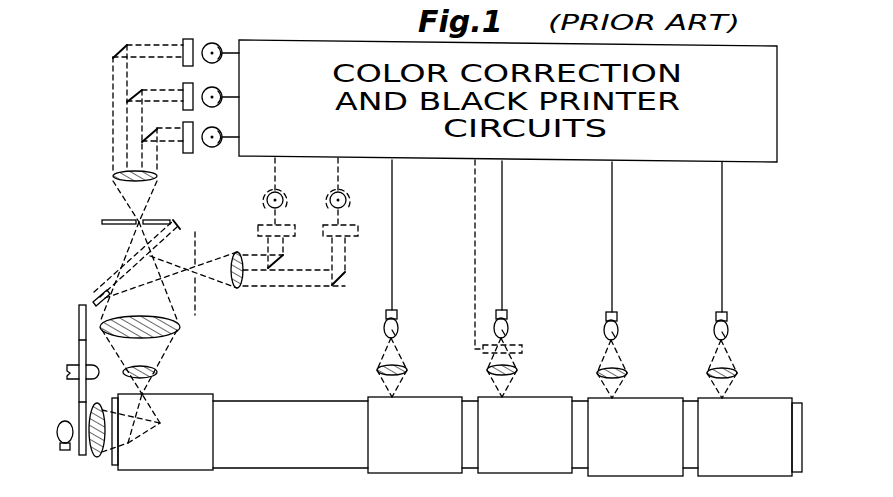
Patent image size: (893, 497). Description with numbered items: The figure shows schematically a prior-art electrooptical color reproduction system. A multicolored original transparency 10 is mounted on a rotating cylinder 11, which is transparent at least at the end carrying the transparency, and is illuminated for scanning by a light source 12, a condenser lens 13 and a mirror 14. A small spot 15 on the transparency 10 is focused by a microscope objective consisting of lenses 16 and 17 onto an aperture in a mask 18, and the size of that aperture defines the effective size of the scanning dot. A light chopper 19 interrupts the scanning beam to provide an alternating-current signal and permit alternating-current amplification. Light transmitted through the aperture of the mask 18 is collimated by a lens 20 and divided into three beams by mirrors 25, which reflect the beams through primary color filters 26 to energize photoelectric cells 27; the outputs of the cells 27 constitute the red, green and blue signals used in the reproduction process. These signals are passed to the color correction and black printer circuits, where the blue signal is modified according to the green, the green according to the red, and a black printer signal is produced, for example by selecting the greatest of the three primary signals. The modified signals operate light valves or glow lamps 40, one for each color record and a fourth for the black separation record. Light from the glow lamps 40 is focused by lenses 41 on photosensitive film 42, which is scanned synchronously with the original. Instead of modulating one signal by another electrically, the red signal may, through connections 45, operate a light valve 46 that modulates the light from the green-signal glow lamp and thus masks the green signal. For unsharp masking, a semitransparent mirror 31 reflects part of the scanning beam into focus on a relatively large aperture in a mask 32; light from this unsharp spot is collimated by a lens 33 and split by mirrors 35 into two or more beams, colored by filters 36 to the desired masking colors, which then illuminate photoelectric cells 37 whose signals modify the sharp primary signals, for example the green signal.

The multicolored original transparency 10 is at (200, 470).
The rotating cylinder 11 is at (272, 396).
The light source 12 is at (65, 421).
The condenser lens 13 is at (92, 452).
The mirror 14 is at (150, 432).
The small spot 15 is at (144, 394).
The lens 16 is at (157, 372).
The lens 17 is at (180, 327).
The mask 18 is at (108, 220).
The light chopper 19 is at (79, 355).
The lens 20 is at (155, 177).
The mirrors 25 is at (118, 55).
The primary color filters 26 is at (188, 38).
The photoelectric cells 27 is at (219, 45).
The semitransparent mirror 31 is at (98, 292).
The mask 32 is at (196, 260).
The lens 33 is at (237, 290).
The mirrors 35 is at (276, 263).
The filters 36 is at (258, 229).
The photoelectric cells 37 is at (265, 196).
The glow lamps 40 is at (396, 326).
The lenses 41 is at (403, 370).
The photosensitive film 42 is at (585, 436).
The connections 45 is at (472, 222).
The light valve 46 is at (484, 352).